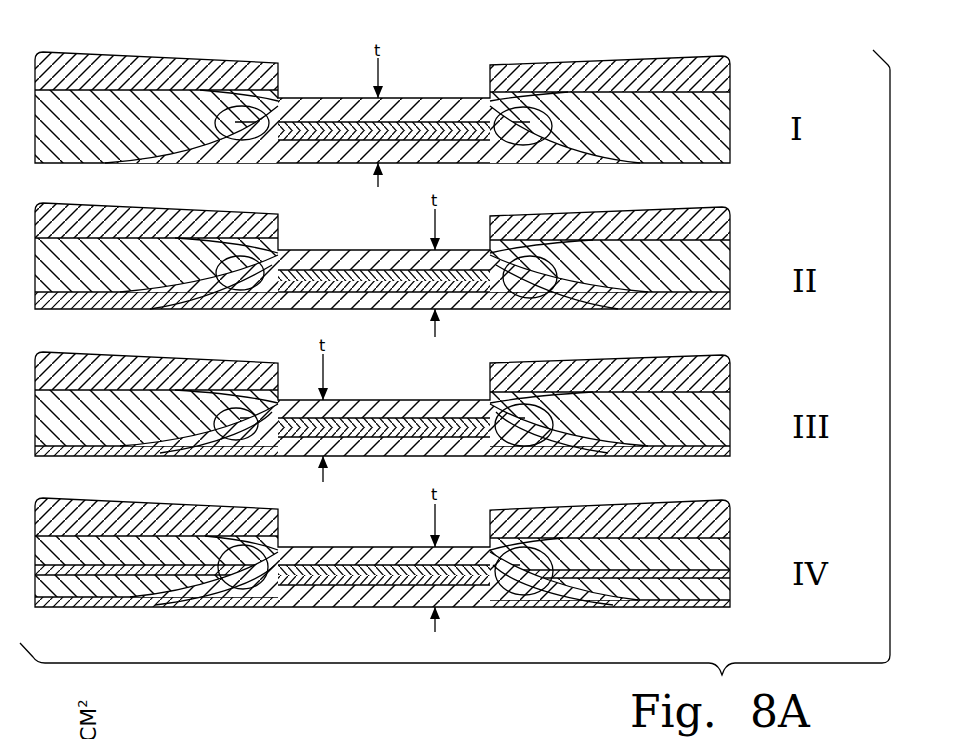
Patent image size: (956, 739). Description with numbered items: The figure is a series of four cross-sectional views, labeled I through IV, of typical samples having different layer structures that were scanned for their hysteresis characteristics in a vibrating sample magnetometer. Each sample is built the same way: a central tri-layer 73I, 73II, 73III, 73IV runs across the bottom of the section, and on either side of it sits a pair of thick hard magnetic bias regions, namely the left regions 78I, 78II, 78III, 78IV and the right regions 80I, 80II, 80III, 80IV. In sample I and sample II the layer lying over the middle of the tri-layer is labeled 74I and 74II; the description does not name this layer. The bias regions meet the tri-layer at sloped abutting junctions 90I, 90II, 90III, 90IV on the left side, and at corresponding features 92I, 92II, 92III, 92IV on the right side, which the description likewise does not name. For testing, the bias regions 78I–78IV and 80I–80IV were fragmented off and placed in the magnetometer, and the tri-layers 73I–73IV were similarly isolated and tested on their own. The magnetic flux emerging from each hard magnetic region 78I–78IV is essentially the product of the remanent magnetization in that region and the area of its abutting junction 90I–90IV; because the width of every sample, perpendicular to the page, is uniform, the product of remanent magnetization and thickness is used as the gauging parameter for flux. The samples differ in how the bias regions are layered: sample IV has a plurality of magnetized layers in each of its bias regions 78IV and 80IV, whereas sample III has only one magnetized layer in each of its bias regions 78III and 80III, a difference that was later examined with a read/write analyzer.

The hard magnetic bias region 78I is at (258, 84).
The membrane layer (stage I) 74I is at (416, 104).
The hard magnetic bias region 80I is at (500, 88).
The abutting junction 90I is at (234, 152).
The right transition region (stage I) 92I is at (548, 152).
The tri-layer 73I is at (356, 170).
The hard magnetic bias region 78II is at (172, 230).
The membrane layer (stage II) 74II is at (342, 258).
The hard magnetic bias region 80II is at (625, 230).
The abutting junction 90II is at (234, 308).
The right transition region (stage II) 92II is at (549, 308).
The tri-layer 73II is at (412, 316).
The hard magnetic bias region 78III is at (112, 380).
The hard magnetic bias region 80III is at (657, 381).
The abutting junction 90III is at (234, 456).
The right transition region (stage III) 92III is at (546, 450).
The tri-layer 73III is at (406, 466).
The hard magnetic bias region 78IV is at (115, 521).
The hard magnetic bias region 80IV is at (659, 528).
The abutting junction 90IV is at (237, 606).
The right transition region (stage IV) 92IV is at (548, 603).
The tri-layer 73IV is at (378, 615).